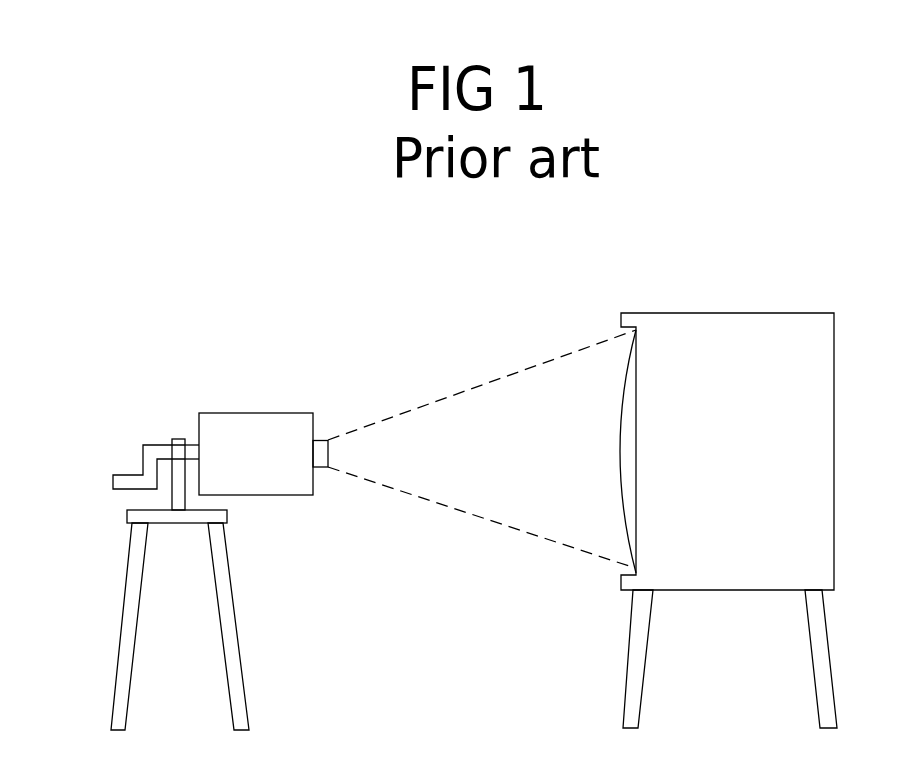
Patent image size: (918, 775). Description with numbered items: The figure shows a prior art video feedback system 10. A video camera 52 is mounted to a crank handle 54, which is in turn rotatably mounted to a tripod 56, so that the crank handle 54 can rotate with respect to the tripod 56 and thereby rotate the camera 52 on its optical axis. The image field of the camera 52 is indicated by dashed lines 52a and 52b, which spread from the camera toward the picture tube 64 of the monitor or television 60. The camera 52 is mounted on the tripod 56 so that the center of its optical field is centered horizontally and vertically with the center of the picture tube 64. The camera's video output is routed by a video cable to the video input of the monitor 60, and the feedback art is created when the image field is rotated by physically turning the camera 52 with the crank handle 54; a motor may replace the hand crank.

The prior art video feedback system 10 is at (367, 282).
The video camera 52 is at (255, 405).
The image field dashed line 52a is at (432, 393).
The image field dashed line 52b is at (433, 513).
The crank handle 54 is at (128, 467).
The tripod 56 is at (242, 595).
The monitor or television 60 is at (628, 615).
The picture tube 64 is at (618, 445).